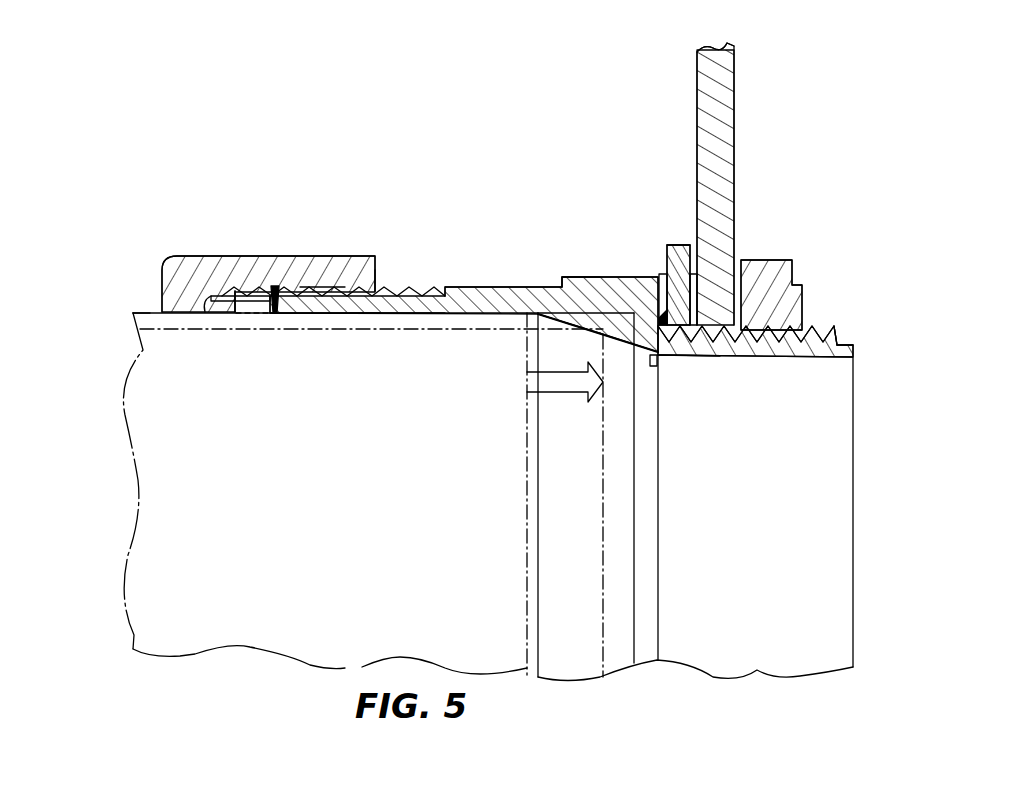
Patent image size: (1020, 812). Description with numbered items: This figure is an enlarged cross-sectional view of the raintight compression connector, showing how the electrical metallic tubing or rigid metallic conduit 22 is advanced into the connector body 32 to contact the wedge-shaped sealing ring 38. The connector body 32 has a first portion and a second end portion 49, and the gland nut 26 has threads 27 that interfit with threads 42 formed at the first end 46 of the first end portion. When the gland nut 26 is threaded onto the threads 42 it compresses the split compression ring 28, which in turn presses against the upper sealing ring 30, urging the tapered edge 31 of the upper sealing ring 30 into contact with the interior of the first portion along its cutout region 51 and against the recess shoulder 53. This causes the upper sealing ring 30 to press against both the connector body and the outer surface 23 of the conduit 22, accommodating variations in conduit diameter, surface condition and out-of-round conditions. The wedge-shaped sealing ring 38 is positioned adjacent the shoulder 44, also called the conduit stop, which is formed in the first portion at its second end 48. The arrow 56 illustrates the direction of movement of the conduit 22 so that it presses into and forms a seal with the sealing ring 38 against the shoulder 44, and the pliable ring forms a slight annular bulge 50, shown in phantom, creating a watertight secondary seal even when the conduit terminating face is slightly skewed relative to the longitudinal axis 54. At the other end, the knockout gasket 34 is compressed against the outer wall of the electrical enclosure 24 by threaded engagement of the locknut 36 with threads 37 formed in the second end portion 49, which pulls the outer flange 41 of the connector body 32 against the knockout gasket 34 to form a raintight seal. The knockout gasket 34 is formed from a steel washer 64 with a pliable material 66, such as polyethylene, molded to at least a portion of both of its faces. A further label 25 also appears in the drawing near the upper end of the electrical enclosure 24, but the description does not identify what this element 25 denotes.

The electrical metallic tubing or rigid metallic conduit 22 is at (122, 318).
The outer surface 23 is at (155, 311).
The electrical enclosure 24 is at (718, 105).
The rod end 25 is at (694, 78).
The gland nut 26 is at (300, 256).
The threads 27 is at (240, 298).
The split compression ring 28 is at (238, 312).
The upper sealing ring 30 is at (325, 313).
The tapered edge 31 is at (385, 292).
The connector body 32 is at (484, 282).
The knockout gasket 34 is at (683, 238).
The locknut 36 is at (775, 262).
The threads 37 is at (838, 330).
The wedge-shaped sealing ring 38 is at (563, 313).
The outer flange 41 is at (568, 322).
The threads 42 is at (418, 287).
The shoulder 44 is at (655, 355).
The first end 46 is at (275, 312).
The second end 48 is at (682, 358).
The second end portion 49 is at (811, 313).
The annular bulge 50 is at (602, 337).
The cutout region 51 is at (322, 292).
The recess shoulder 53 is at (363, 313).
The longitudinal axis 54 is at (578, 338).
The arrow 56 is at (560, 382).
The steel washer 64 is at (668, 258).
The pliable material 66 is at (659, 285).